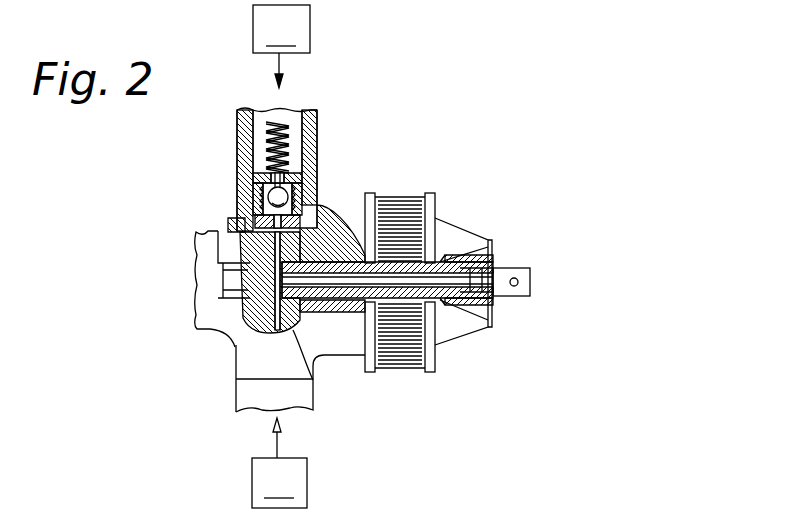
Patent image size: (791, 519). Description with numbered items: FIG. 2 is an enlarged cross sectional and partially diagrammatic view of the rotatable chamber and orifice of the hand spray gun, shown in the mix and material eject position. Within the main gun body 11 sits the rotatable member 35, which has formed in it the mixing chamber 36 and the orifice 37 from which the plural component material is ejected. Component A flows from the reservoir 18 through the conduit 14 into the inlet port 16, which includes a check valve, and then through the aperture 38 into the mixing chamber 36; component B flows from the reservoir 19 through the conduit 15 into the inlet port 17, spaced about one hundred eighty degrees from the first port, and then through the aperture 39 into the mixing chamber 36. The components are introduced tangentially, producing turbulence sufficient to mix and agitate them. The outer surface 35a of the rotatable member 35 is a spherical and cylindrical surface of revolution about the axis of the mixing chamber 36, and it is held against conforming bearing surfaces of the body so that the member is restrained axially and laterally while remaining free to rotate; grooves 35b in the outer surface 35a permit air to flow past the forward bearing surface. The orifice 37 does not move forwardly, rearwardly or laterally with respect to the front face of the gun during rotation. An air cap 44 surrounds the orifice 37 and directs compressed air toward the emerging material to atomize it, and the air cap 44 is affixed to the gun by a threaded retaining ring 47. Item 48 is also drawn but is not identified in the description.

The main gun body 11 is at (203, 333).
The conduit 14 is at (279, 70).
The conduit 15 is at (277, 446).
The inlet port 16 is at (273, 210).
The inlet port 17 is at (310, 380).
The reservoir 18 is at (281, 29).
The reservoir 19 is at (279, 483).
The rotatable member 35 is at (242, 310).
The outer surface 35a is at (233, 223).
The grooves 35b is at (478, 263).
The mixing chamber 36 is at (442, 264).
The orifice 37 is at (500, 294).
The aperture 38 is at (320, 213).
The aperture 39 is at (260, 330).
The air cap 44 is at (472, 233).
The threaded retaining ring 47 is at (436, 370).
The inlet passage 48 is at (230, 221).